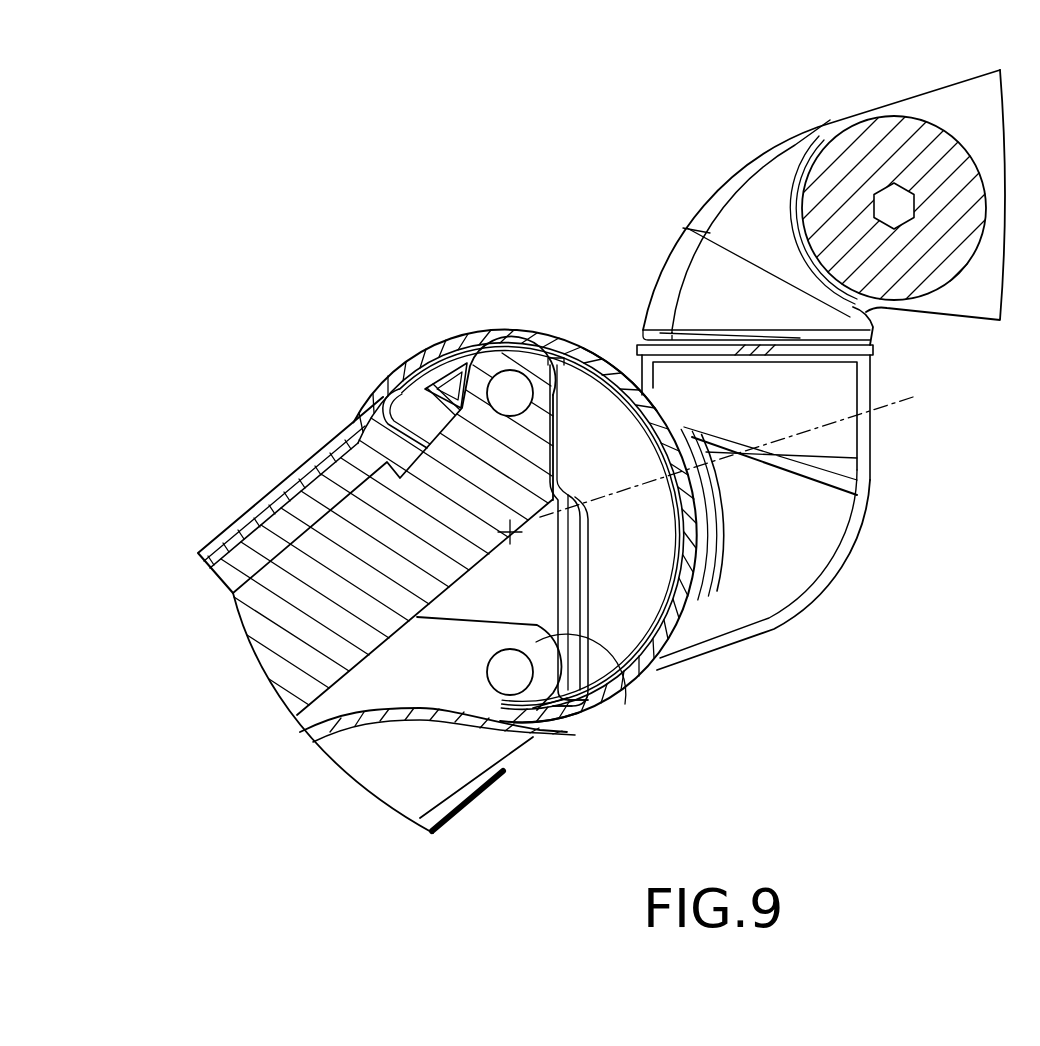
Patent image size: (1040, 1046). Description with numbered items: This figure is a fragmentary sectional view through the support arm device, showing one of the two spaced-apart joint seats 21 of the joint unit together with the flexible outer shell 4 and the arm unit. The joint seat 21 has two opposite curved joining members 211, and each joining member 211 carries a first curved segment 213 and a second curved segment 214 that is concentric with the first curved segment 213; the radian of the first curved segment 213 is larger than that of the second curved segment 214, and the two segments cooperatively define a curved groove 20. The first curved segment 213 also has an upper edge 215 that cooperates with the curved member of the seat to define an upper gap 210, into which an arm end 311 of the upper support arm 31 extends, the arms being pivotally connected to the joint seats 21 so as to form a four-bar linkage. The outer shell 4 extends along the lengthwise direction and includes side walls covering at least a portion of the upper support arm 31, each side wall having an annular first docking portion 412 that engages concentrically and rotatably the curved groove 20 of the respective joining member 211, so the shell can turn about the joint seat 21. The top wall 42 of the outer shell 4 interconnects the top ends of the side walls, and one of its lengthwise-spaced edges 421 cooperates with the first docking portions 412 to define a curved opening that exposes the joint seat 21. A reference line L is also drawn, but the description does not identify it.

The outer shell 4 is at (278, 468).
The top wall 42 is at (208, 543).
The edge of the top wall 421 is at (306, 470).
The upper support arm 31 is at (267, 557).
The arm end of the upper support arm 311 is at (508, 338).
The upper gap 210 is at (548, 352).
The upper edge 215 is at (577, 357).
The first curved segment 213 is at (592, 372).
The second curved segment 214 is at (723, 532).
The joining member 211 is at (697, 593).
The joint seat 21 is at (772, 628).
The curved groove 20 is at (713, 447).
The first docking portion 412 is at (705, 500).
The axis line L is at (736, 451).